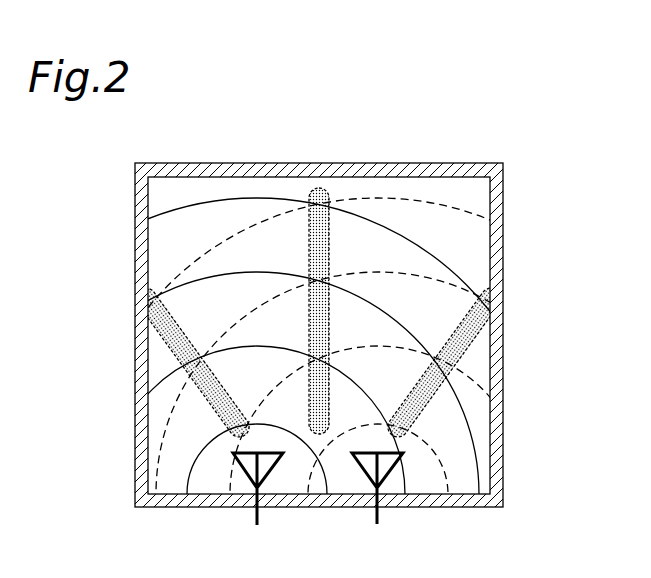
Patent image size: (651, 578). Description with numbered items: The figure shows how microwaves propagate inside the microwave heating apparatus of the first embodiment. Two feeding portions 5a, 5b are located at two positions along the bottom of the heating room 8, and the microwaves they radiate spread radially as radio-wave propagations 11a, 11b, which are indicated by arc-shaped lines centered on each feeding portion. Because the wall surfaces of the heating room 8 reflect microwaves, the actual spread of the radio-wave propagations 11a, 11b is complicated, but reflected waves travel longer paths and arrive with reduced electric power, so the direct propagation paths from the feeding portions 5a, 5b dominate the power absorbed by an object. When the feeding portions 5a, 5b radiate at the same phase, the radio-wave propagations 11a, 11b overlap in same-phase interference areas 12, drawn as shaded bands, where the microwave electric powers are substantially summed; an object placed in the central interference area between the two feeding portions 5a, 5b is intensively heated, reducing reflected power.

The heating room 8 is at (495, 247).
The radio-wave propagation 11a is at (177, 208).
The radio-wave propagation 11b is at (462, 212).
The same-phase interference area 12 is at (178, 350).
The feeding portion 5a is at (245, 468).
The feeding portion 5b is at (385, 475).